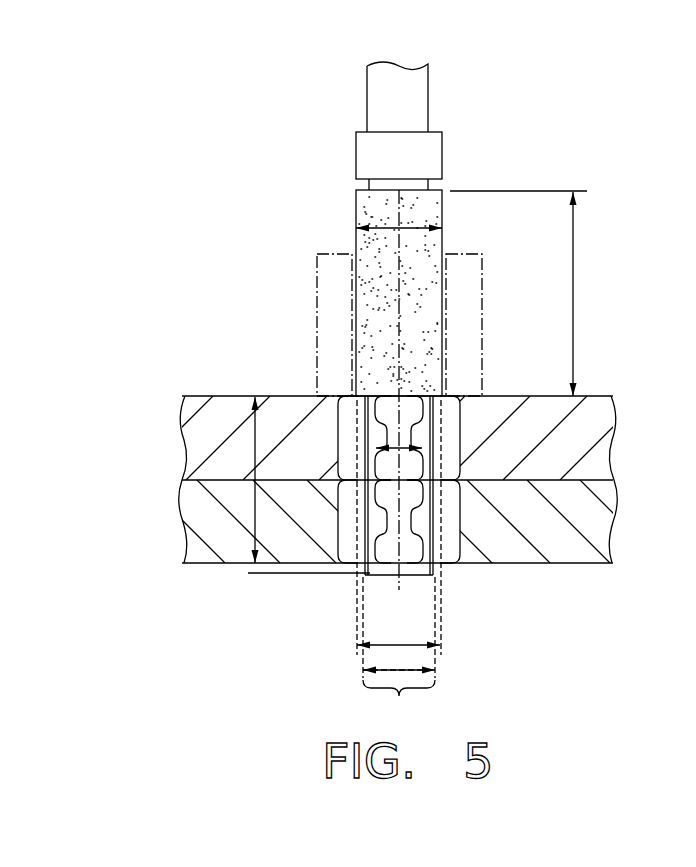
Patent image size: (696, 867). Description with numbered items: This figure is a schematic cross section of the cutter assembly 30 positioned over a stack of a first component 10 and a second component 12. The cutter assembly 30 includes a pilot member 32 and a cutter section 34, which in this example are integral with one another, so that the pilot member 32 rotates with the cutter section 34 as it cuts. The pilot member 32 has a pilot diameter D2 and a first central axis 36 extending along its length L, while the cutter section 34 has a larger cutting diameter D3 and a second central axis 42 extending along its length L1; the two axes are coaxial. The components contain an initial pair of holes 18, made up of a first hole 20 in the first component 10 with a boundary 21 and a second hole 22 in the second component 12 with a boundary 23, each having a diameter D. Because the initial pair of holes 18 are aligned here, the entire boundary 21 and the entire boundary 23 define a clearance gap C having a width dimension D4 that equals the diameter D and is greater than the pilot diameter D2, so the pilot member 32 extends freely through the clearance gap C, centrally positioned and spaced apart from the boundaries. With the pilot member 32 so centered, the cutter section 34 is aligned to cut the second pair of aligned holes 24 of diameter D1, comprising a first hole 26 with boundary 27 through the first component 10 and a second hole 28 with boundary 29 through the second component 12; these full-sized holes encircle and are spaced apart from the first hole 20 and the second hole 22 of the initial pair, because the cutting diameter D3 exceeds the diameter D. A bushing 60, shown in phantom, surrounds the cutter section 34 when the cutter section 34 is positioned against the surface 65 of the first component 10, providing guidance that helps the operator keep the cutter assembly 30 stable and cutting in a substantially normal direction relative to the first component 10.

The cutter assembly 30 is at (455, 153).
The cutter section 34 is at (428, 300).
The bushing 60 is at (342, 278).
The second central axis 42 is at (398, 214).
The first component 10 is at (200, 450).
The second component 12 is at (200, 534).
The first hole 20 is at (412, 430).
The initial pair of holes 18 is at (445, 535).
The boundary of first hole 21 is at (388, 440).
The second hole 22 is at (368, 548).
The boundary of second hole 23 is at (352, 512).
The second pair of aligned holes 24 is at (338, 498).
The first hole of second pair of aligned holes 26 is at (452, 445).
The boundary of first hole of second pair 27 is at (455, 450).
The second hole of second pair of aligned holes 28 is at (466, 520).
The boundary of second hole of second pair 29 is at (440, 550).
The pilot member 32 is at (440, 570).
The first central axis 36 is at (433, 578).
The surface of first component 65 is at (233, 396).
The length of pilot member L is at (253, 446).
The length of cutter section L1 is at (573, 262).
The diameter of initial holes D is at (393, 577).
The diameter of aligned full-sized holes D1 is at (392, 645).
The pilot diameter D2 is at (372, 448).
The cutting diameter D3 is at (408, 226).
The width dimension of clearance gap D4 is at (400, 660).
The clearance gap C is at (403, 697).